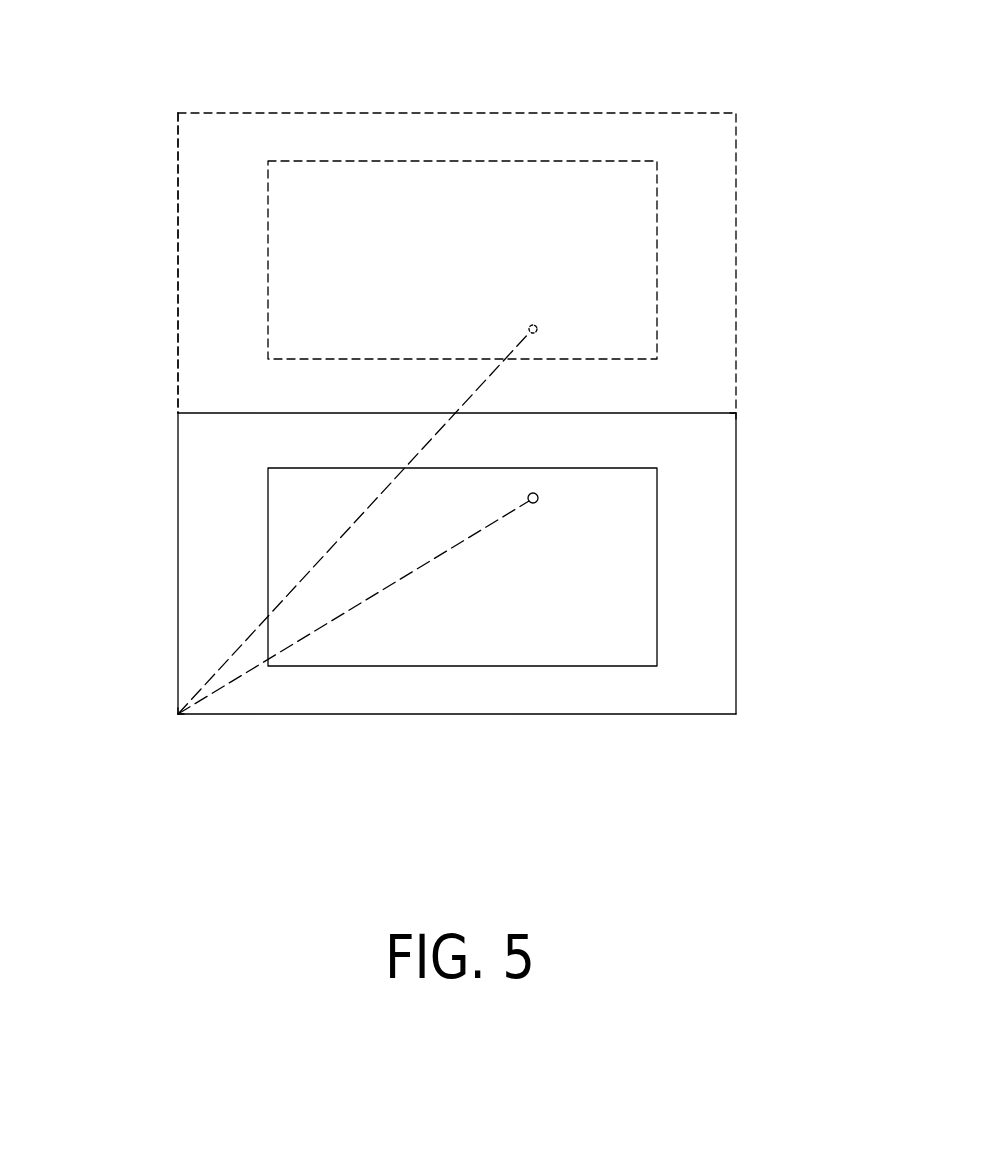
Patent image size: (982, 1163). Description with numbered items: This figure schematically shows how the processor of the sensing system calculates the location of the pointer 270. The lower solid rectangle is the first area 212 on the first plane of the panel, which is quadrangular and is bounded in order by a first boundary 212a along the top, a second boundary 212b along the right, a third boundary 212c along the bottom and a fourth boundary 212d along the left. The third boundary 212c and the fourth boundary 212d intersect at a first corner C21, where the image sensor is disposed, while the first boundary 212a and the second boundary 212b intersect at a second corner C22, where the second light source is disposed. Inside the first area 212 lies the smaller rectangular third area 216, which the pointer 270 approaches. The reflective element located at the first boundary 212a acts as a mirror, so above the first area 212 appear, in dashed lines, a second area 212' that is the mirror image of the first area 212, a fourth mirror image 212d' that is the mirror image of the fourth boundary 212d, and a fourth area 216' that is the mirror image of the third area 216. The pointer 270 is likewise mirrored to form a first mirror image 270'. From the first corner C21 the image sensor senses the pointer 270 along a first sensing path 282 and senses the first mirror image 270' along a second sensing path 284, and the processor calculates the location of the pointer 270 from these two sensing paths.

The second area 212' is at (391, 263).
The fourth mirror image 212d' is at (115, 263).
The fourth area 216' is at (462, 187).
The first mirror image 270' is at (673, 320).
The first boundary 212a is at (665, 413).
The second corner C22 is at (736, 413).
The first area 212 is at (454, 565).
The pointer 270 is at (669, 487).
The third area 216 is at (554, 567).
The second boundary 212b is at (737, 620).
The third boundary 212c is at (615, 715).
The fourth boundary 212d is at (113, 563).
The second sensing path 284 is at (307, 574).
The first sensing path 282 is at (347, 613).
The first corner C21 is at (178, 714).